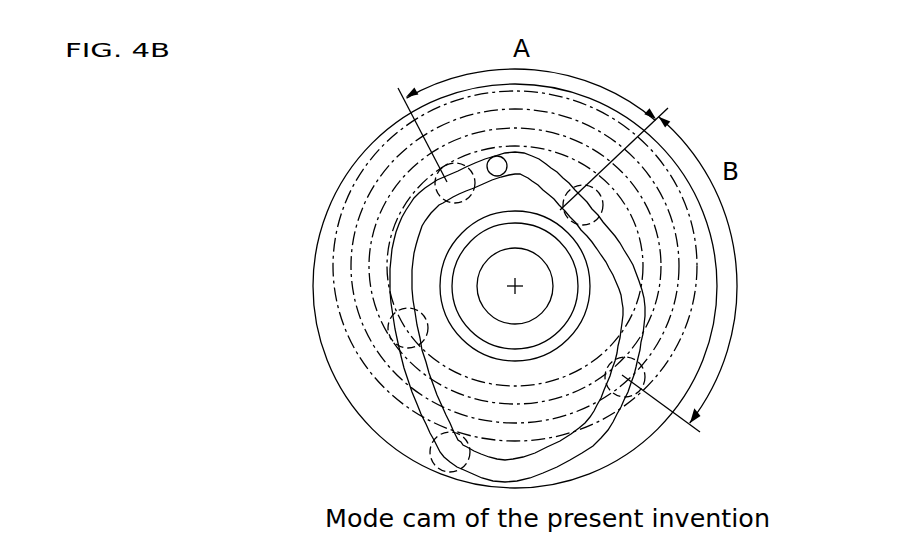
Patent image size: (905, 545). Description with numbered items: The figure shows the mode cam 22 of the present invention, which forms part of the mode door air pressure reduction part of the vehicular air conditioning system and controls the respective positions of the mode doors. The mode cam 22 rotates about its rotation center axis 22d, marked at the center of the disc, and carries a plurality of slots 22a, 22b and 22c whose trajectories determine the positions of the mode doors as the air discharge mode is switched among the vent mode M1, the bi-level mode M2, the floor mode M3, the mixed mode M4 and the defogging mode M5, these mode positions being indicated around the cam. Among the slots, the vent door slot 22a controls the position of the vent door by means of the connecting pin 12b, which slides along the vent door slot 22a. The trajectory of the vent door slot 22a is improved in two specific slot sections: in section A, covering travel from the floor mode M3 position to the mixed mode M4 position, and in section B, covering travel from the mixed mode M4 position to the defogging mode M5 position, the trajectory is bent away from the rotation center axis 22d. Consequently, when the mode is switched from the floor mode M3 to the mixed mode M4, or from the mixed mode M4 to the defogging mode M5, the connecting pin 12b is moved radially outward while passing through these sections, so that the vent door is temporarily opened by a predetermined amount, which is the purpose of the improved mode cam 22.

The mode cam 22 is at (383, 100).
The connecting pin 12b is at (492, 157).
The vent door slot 22a is at (434, 205).
The slot 22b is at (378, 243).
The slot 22c is at (343, 292).
The rotation center axis 22d is at (520, 284).
The vent mode M1 is at (430, 452).
The bi-level mode M2 is at (388, 340).
The floor mode M3 is at (394, 134).
The mixed mode M4 is at (618, 240).
The defogging mode M5 is at (640, 370).